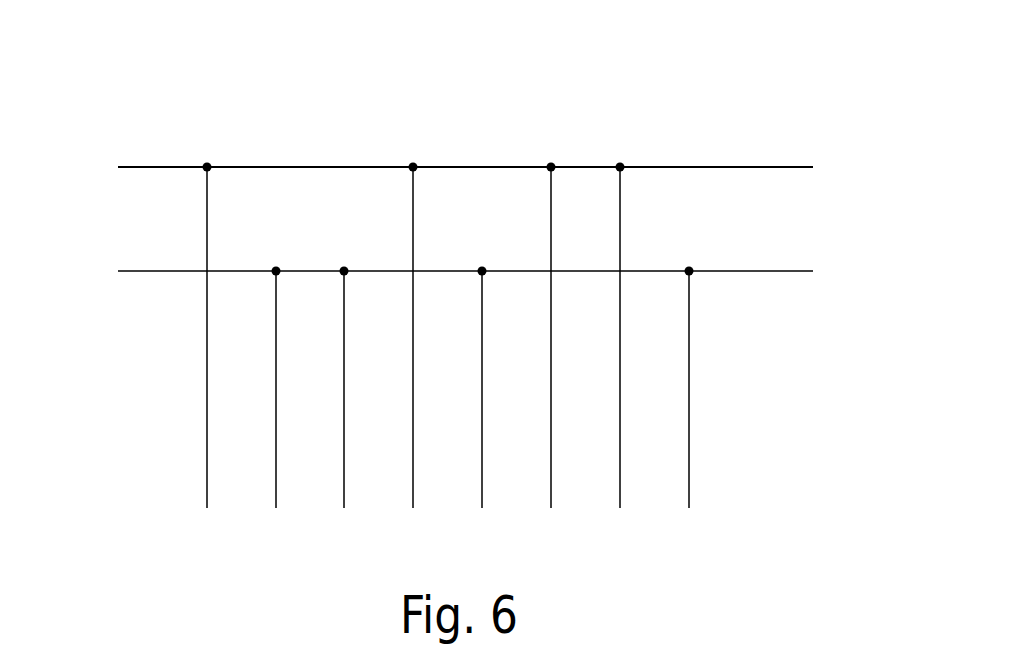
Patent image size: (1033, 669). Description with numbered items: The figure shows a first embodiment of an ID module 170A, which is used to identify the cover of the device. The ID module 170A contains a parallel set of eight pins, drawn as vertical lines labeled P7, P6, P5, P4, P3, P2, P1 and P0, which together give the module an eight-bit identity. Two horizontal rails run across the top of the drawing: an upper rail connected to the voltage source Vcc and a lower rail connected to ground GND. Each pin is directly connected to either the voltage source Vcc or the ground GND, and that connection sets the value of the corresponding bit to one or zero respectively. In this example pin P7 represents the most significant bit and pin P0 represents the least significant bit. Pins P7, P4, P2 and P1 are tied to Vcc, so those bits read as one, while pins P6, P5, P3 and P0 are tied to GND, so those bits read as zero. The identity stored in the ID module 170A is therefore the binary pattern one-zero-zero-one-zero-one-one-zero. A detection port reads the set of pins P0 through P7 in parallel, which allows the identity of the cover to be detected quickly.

The ID module 170A is at (472, 284).
The voltage source Vcc is at (432, 164).
The ground GND is at (428, 267).
The pin P7 is at (198, 358).
The pin P6 is at (268, 410).
The pin P5 is at (337, 410).
The pin P4 is at (405, 358).
The pin P3 is at (475, 410).
The pin P2 is at (544, 358).
The pin P1 is at (612, 358).
The pin P0 is at (680, 410).